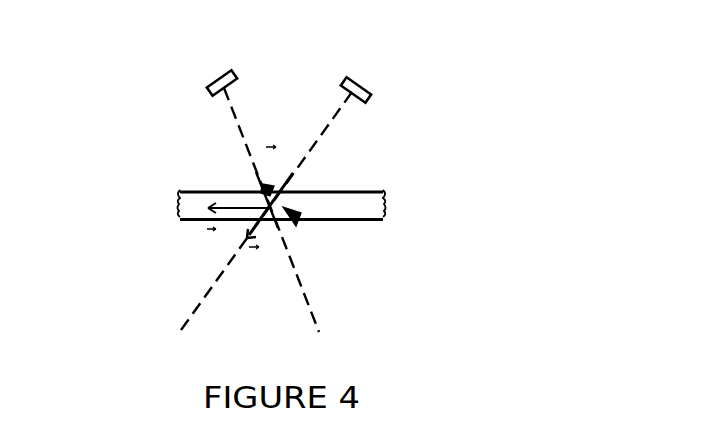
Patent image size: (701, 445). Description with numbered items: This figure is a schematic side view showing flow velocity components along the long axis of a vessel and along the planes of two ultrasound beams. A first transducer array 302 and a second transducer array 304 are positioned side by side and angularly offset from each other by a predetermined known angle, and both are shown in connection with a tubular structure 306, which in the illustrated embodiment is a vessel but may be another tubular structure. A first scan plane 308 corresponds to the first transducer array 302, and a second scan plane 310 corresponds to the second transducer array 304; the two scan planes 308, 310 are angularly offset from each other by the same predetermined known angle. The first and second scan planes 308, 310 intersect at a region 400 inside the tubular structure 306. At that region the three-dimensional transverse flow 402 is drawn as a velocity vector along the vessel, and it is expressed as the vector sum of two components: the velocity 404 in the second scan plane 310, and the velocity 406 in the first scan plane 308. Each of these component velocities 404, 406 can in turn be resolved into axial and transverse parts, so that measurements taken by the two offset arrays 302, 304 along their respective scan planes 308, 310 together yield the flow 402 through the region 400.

The first transducer array 302 is at (208, 82).
The second transducer array 304 is at (363, 102).
The tubular structure 306 is at (175, 202).
The first scan plane 308 is at (317, 321).
The second scan plane 310 is at (212, 283).
The region 400 is at (298, 220).
The 3D transverse flow 402 is at (210, 207).
The velocity V_A 404 is at (263, 221).
The velocity V_B 406 is at (264, 186).